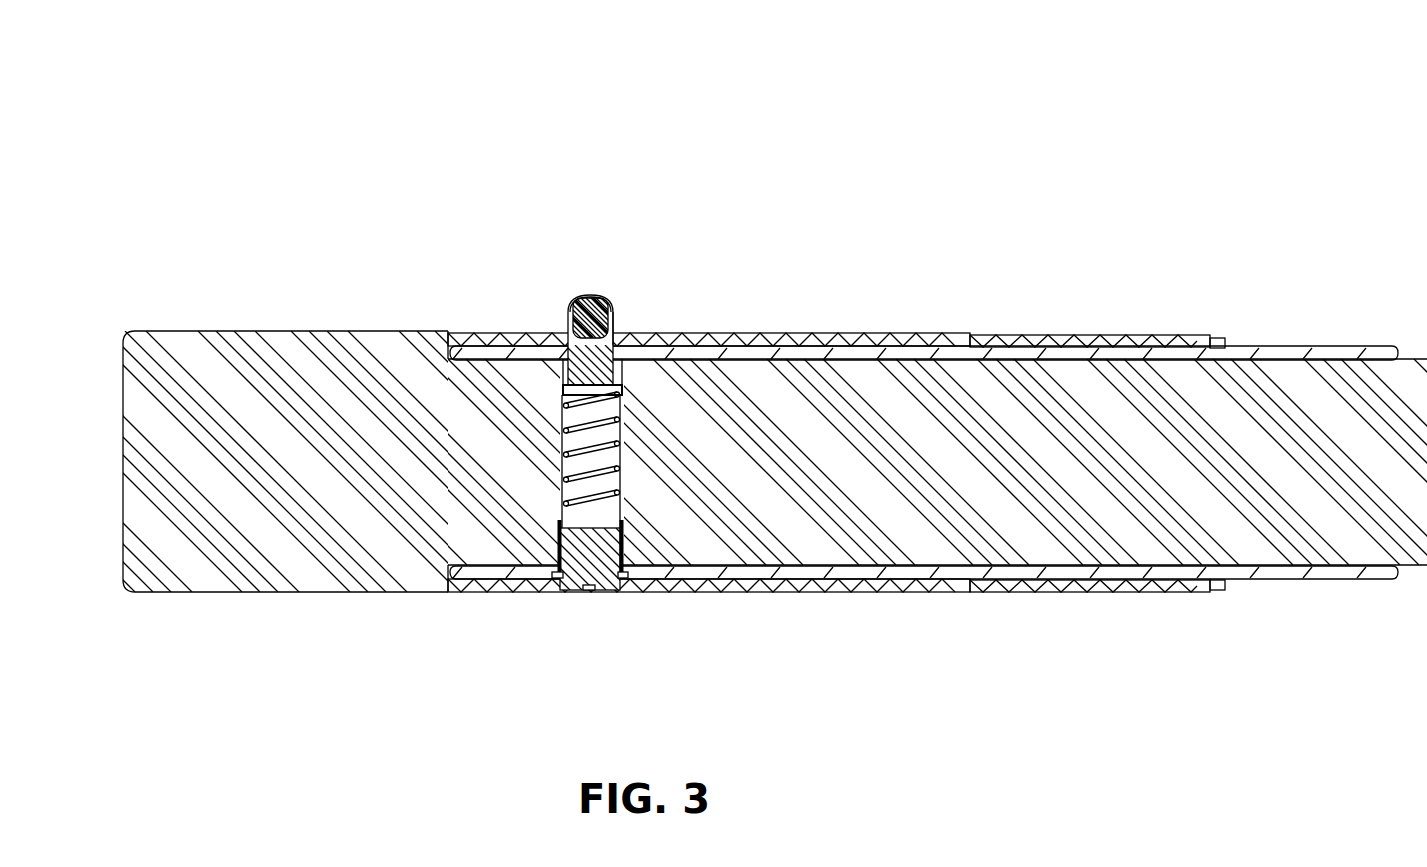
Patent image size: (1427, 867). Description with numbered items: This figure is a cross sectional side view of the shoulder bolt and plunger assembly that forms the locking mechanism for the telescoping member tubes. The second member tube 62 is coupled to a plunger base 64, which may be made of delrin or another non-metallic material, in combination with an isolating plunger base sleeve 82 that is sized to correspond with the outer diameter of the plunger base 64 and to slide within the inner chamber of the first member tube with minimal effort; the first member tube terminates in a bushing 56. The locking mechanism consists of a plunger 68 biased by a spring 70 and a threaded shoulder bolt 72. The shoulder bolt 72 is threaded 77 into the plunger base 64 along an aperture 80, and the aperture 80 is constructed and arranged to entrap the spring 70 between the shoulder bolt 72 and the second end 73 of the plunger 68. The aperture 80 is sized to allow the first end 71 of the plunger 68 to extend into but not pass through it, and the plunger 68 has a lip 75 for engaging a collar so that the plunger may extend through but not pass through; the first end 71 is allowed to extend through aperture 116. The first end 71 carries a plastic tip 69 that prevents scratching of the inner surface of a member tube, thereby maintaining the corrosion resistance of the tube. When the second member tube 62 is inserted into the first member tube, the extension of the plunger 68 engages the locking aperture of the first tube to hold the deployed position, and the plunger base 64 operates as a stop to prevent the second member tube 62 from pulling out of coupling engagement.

The bushing 56 is at (1308, 416).
The second member tube 62 is at (924, 410).
The plunger base 64 is at (356, 393).
The plunger 68 is at (521, 290).
The plastic tip 69 is at (504, 166).
The spring 70 is at (844, 494).
The first end 71 is at (716, 213).
The threaded shoulder bolt 72 is at (638, 621).
The second end 73 is at (691, 265).
The lip 75 is at (691, 296).
The threaded 77 is at (520, 593).
The aperture 80 is at (691, 383).
The plunger base sleeve 82 is at (829, 417).
The aperture 116 is at (521, 228).